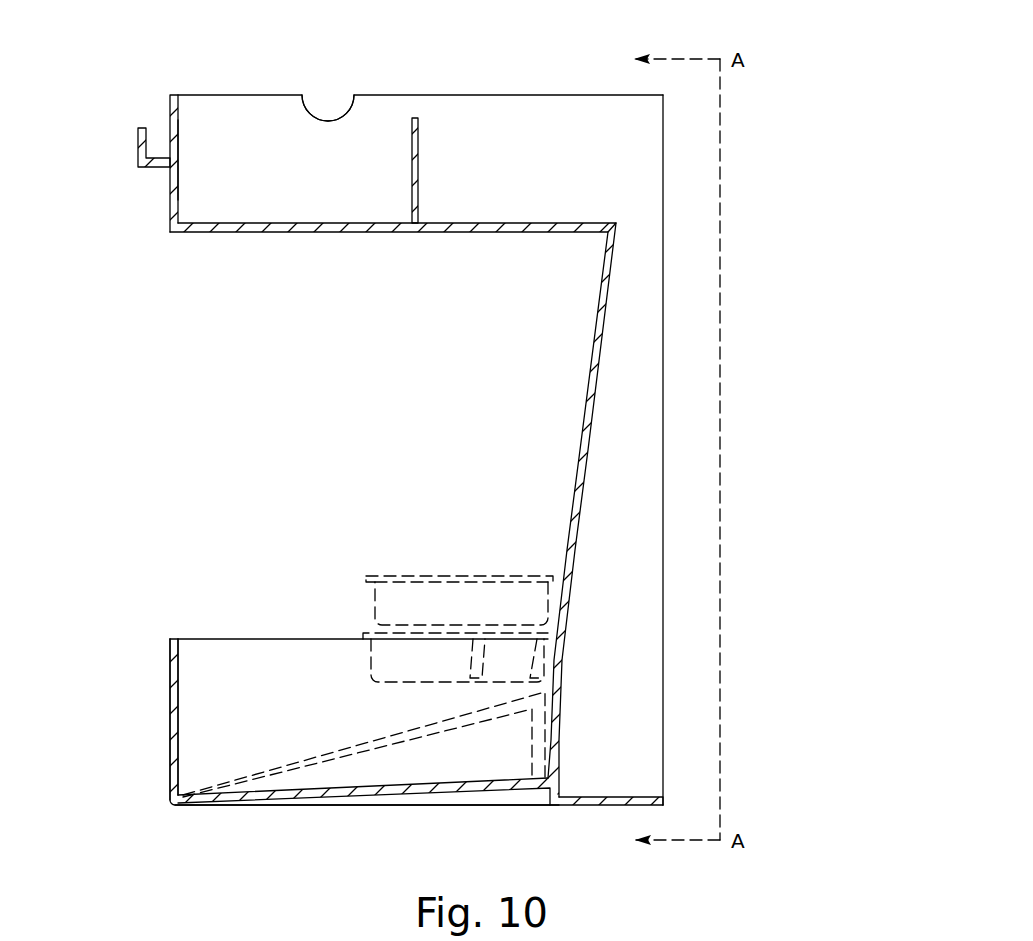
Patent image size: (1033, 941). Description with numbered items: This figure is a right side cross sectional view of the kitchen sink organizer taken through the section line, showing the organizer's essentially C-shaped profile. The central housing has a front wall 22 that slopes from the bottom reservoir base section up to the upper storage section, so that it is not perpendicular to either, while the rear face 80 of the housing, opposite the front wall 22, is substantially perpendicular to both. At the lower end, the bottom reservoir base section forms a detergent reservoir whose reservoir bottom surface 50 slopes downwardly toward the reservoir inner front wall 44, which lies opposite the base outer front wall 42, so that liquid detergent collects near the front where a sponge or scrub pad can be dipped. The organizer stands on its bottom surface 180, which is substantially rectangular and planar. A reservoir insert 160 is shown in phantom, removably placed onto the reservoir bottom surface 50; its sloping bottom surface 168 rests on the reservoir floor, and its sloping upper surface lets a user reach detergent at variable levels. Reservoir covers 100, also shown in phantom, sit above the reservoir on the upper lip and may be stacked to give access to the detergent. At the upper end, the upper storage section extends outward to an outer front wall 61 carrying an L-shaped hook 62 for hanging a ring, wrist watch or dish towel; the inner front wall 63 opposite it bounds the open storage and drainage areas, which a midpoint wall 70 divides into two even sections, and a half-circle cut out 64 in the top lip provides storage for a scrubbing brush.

The front wall 22 is at (558, 457).
The base outer front wall 42 is at (160, 712).
The reservoir inner front wall 44 is at (188, 677).
The reservoir bottom surface 50 is at (347, 783).
The outer front wall 61 is at (155, 108).
The L-shaped hook 62 is at (127, 152).
The inner front wall 63 is at (188, 173).
The half-circle cut outs 64 is at (332, 97).
The midpoint wall 70 is at (430, 155).
The rear face 80 is at (680, 460).
The reservoir covers 100 is at (413, 558).
The reservoir insert 160 is at (322, 747).
The sloping bottom surface 168 is at (412, 738).
The bottom surface 180 is at (420, 810).